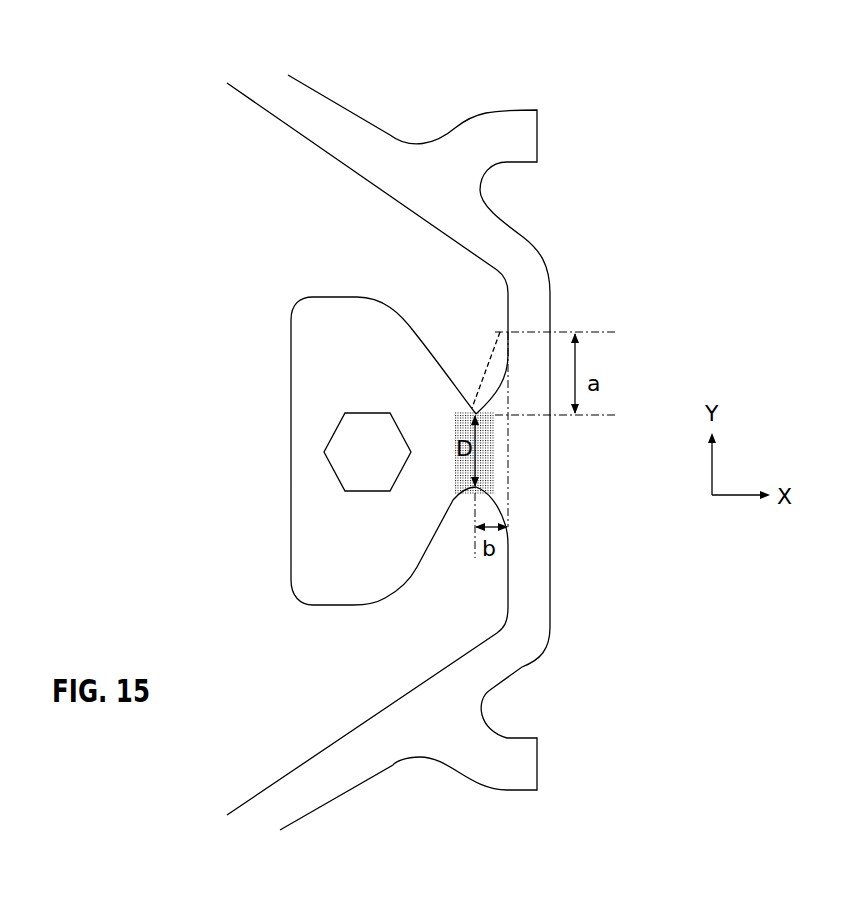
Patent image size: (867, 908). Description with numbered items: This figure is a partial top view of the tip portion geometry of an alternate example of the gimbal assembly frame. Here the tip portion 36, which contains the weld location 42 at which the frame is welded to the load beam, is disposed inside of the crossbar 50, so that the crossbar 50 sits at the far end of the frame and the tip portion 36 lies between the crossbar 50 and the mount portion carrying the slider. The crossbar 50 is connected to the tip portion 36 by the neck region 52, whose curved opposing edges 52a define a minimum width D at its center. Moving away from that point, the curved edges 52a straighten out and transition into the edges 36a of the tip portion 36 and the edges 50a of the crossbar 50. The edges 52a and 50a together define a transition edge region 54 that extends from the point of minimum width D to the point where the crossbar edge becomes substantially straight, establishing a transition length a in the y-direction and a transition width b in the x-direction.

The tip portion 36 is at (284, 515).
The edges of the tip portion 36a is at (445, 383).
The weld location 42 is at (333, 432).
The crossbar 50 is at (550, 572).
The edges of the crossbar 50a is at (508, 363).
The neck region 52 is at (458, 477).
The edges of the neck region 52a is at (493, 417).
The transition edge region 54 is at (484, 371).